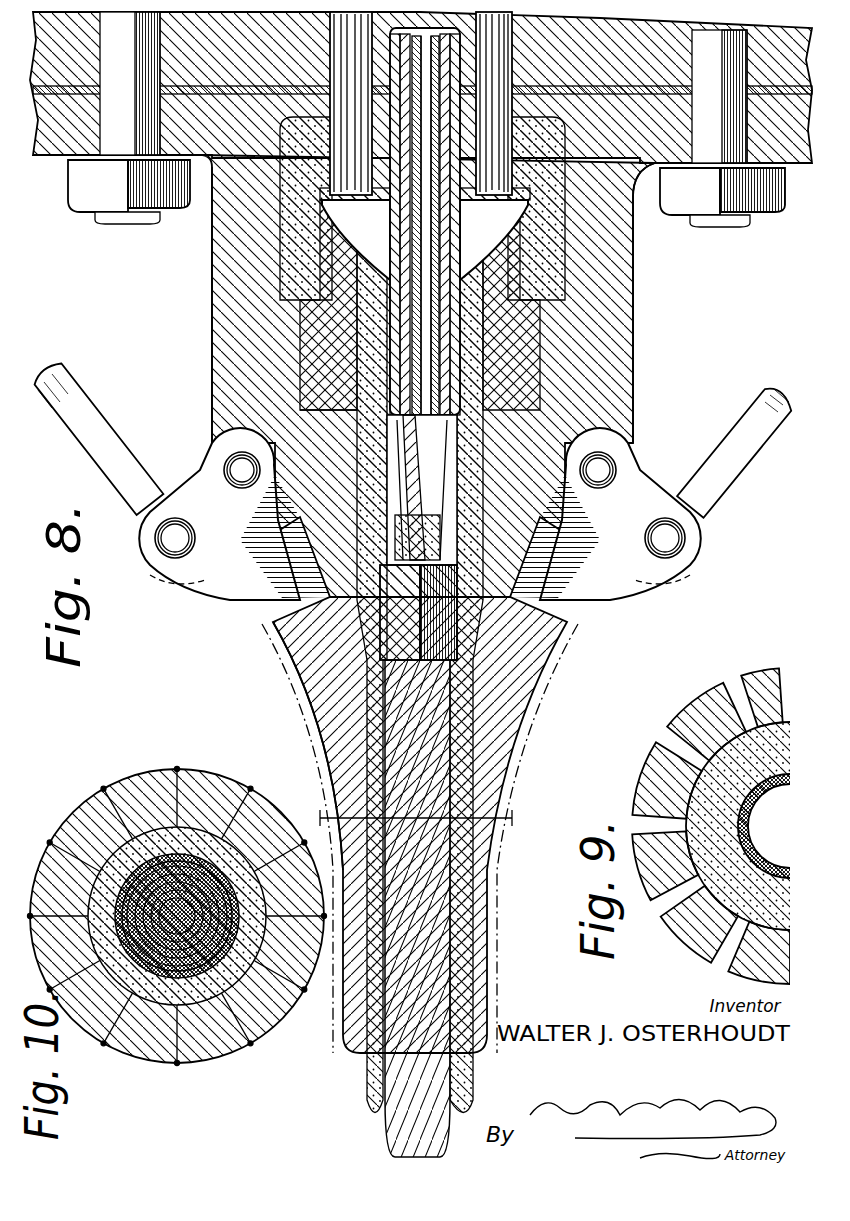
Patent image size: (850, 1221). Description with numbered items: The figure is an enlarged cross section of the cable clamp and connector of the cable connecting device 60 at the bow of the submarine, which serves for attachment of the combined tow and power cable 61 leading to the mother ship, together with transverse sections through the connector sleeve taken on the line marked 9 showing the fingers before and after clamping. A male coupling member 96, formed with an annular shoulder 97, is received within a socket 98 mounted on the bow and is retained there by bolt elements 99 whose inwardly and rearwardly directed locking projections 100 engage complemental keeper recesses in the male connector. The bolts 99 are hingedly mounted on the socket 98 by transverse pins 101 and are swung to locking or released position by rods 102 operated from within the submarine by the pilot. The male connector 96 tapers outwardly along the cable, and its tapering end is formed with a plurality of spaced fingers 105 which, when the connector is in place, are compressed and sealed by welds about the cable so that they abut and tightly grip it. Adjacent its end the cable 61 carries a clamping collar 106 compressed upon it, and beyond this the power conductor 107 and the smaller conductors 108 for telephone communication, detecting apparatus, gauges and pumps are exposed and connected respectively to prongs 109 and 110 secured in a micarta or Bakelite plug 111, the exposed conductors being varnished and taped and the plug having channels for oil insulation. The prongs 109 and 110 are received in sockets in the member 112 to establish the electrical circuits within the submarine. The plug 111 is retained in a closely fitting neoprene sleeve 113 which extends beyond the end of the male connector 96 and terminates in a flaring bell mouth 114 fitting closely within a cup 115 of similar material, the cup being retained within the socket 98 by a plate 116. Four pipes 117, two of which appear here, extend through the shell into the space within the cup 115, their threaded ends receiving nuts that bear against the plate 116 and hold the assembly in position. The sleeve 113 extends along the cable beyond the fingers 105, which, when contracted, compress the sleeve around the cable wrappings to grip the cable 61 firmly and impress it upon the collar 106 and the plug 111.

In FIG. 8, the cable connecting device 60 is at (222, 362).
In FIG. 8, the combined tow and power cable 61 is at (455, 1066).
In FIG. 8, the male coupling member 96 is at (286, 624).
In FIG. 8, the annular shoulder 97 is at (260, 402).
In FIG. 8, the socket 98 is at (212, 296).
In FIG. 8, the bolt elements 99 is at (222, 588).
In FIG. 8, the locking projections 100 is at (270, 552).
In FIG. 8, the transverse pins 101 is at (242, 475).
In FIG. 8, the rods 102 is at (130, 492).
In FIG. 8, the fingers 105 is at (490, 870).
In FIG. 9, the fingers 105 is at (642, 770).
In FIG. 10, the fingers 105 is at (218, 766).
In FIG. 8, the clamping collar 106 is at (378, 648).
In FIG. 8, the power conductor 107 is at (423, 482).
In FIG. 8, the smaller conductors 108 is at (532, 672).
In FIG. 8, the prong 109 is at (462, 330).
In FIG. 8, the prongs 110 is at (392, 272).
In FIG. 8, the plug 111 is at (497, 210).
In FIG. 8, the member 112 is at (482, 76).
In FIG. 8, the sleeve 113 is at (368, 352).
In FIG. 8, the flaring bell mouth 114 is at (352, 224).
In FIG. 8, the cup 115 is at (292, 206).
In FIG. 8, the plate 116 is at (300, 170).
In FIG. 8, the pipes 117 is at (636, 212).
In FIG. 8, the section line 9 is at (409, 818).